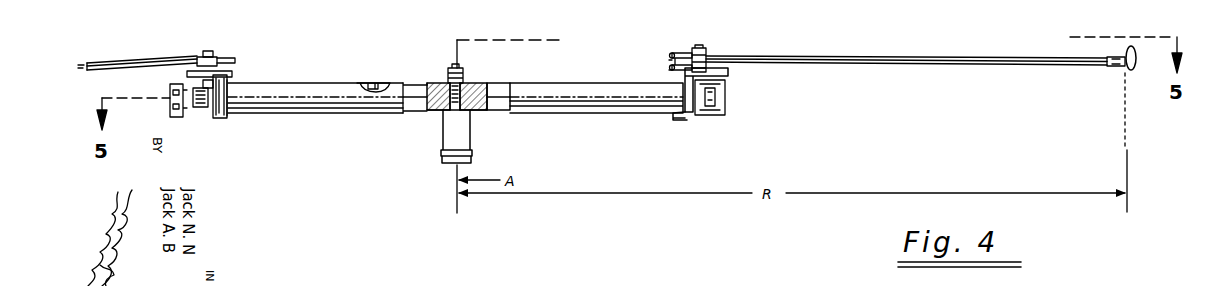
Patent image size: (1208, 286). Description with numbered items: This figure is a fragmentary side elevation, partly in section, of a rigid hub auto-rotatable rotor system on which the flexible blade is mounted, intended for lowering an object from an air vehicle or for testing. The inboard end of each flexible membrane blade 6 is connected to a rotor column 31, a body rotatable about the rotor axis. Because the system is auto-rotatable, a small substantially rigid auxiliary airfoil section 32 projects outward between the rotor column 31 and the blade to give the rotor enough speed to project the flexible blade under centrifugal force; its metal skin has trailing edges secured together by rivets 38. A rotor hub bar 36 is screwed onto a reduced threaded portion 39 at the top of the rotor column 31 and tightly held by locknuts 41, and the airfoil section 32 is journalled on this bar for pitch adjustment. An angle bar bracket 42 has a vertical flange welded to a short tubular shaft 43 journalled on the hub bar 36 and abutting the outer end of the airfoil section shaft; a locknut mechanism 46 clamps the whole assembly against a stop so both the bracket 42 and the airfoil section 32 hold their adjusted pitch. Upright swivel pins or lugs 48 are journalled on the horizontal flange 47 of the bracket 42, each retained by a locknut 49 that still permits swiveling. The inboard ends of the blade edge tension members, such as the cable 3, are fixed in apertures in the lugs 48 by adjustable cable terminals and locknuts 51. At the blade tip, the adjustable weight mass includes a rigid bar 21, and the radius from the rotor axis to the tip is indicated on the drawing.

The flexible tension member 3 is at (672, 68).
The flexible membrane 6 is at (917, 64).
The rigid bar 21 is at (1137, 62).
The rotor column 31 is at (472, 138).
The auxiliary airfoil section 32 is at (310, 113).
The rotor hub bar 36 is at (441, 82).
The rivets 38 is at (372, 82).
The reduced threaded portion 39 is at (441, 113).
The locknuts 41 is at (465, 75).
The angle bar bracket 42 is at (679, 120).
The short tubular shaft 43 is at (212, 118).
The locknut mechanism 46 is at (183, 117).
The horizontal flange 47 is at (720, 88).
The swivel pin 48 is at (208, 52).
The locknut 49 is at (228, 76).
The locknuts 51 is at (698, 50).